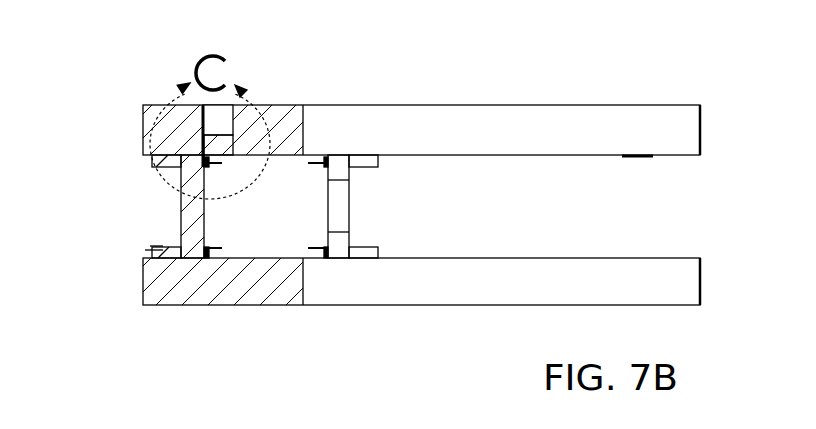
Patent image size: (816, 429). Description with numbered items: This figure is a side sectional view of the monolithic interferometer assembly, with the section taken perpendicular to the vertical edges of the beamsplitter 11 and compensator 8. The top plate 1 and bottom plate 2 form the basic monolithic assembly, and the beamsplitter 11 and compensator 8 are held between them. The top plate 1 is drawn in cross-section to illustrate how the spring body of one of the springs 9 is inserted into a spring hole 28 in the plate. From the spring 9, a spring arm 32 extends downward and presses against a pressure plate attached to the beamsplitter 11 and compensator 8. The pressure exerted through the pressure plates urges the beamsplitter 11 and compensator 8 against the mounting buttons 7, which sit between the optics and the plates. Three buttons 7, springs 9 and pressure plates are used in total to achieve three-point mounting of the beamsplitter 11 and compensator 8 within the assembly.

The top plate 1 is at (530, 123).
The bottom plate 2 is at (680, 295).
The mounting buttons 7 is at (157, 248).
The compensator 8 is at (335, 205).
The springs 9 is at (218, 120).
The beamsplitter 11 is at (181, 203).
The spring hole 28 is at (217, 143).
The spring arm 32 is at (217, 163).